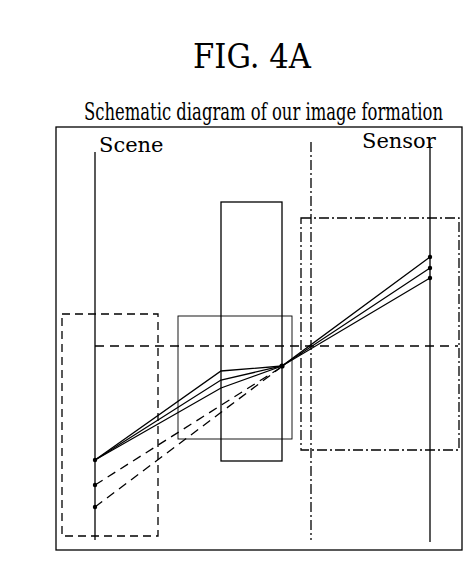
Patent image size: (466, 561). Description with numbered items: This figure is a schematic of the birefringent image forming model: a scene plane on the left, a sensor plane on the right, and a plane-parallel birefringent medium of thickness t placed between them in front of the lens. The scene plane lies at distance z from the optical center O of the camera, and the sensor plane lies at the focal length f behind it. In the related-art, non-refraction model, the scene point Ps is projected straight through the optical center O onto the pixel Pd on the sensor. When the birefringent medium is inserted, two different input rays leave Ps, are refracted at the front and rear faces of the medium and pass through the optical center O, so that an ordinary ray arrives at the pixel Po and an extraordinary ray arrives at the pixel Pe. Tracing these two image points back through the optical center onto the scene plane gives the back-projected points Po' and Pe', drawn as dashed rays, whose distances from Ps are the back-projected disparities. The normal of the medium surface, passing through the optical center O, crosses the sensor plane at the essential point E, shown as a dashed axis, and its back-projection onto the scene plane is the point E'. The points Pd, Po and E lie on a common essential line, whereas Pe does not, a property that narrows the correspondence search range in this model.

The distance between scene plane and optical center z is at (95, 178).
The focal length f is at (430, 178).
The thickness of the birefringent medium t is at (282, 305).
The essential point E is at (276, 358).
The back-projected essential point E' is at (79, 345).
The optical center O is at (326, 360).
The 3D scene point Ps is at (250, 363).
The back-projected point of Pe Pe' is at (175, 432).
The back-projected point of Po Po' is at (175, 446).
The o-ray pixel position Po is at (442, 244).
The e-ray pixel position Pe is at (442, 271).
The projected pixel position without birefringent medium Pd is at (442, 294).